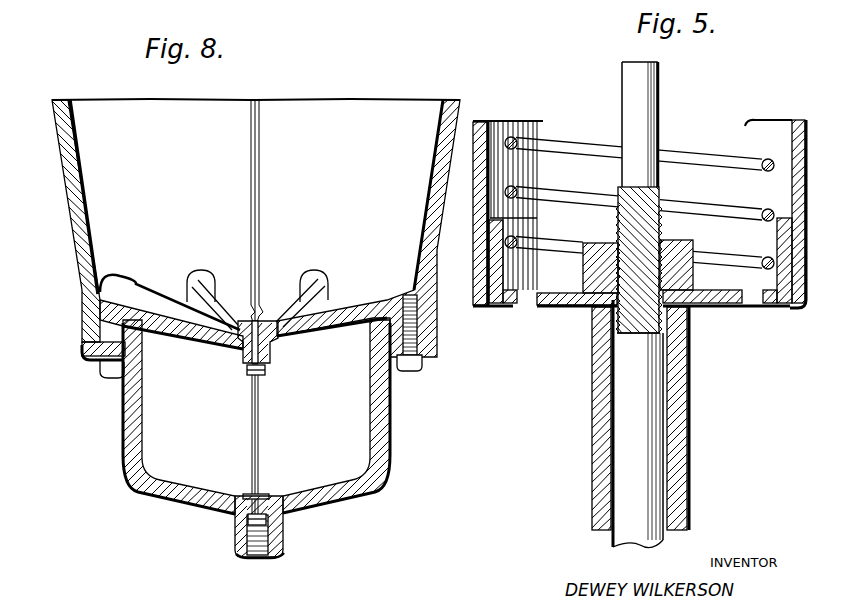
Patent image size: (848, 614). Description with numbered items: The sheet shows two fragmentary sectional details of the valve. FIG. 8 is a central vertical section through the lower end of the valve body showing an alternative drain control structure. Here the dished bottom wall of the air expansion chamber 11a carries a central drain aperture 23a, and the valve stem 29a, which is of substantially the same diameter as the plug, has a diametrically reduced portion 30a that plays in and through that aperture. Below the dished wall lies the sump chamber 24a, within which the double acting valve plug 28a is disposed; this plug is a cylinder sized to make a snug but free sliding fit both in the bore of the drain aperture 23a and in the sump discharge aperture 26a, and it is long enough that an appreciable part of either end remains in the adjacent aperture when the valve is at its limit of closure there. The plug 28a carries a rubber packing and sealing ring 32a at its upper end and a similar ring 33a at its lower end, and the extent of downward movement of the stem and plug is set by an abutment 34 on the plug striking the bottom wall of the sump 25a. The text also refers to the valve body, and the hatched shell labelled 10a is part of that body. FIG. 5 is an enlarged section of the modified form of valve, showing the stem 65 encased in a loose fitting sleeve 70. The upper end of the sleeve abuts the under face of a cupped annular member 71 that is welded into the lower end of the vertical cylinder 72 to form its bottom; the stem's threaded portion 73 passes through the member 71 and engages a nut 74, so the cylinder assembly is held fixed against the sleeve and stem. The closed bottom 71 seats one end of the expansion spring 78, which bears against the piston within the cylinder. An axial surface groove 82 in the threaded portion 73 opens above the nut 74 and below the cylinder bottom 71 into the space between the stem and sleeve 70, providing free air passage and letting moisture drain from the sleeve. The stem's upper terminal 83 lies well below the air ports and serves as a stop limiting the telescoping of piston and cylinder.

In FIG. 8, the lining of upper cup 10a is at (82, 168).
In FIG. 8, the air expansion chamber 11a is at (118, 192).
In FIG. 8, the stem 29a is at (262, 186).
In FIG. 8, the diametrically reduced portion of the stem 30a is at (268, 305).
In FIG. 8, the central drain aperture 23a is at (247, 343).
In FIG. 8, the rubber packing and sealing ring 32a is at (266, 371).
In FIG. 8, the valve plug 28a is at (266, 438).
In FIG. 8, the sump chamber 24a is at (353, 425).
In FIG. 8, the abutment 34 is at (250, 495).
In FIG. 8, the bottom wall of the sump 25a is at (137, 480).
In FIG. 8, the rubber packing and sealing ring 33a is at (268, 522).
In FIG. 8, the sump discharge aperture 26a is at (255, 555).
In FIG. 5, the terminal of the stem 83 is at (630, 62).
In FIG. 5, the vertical cylinder 72 is at (478, 123).
In FIG. 5, the expansion spring 78 is at (720, 157).
In FIG. 5, the threaded portion 73 is at (670, 230).
In FIG. 5, the nut 74 is at (697, 247).
In FIG. 5, the cupped member 71 is at (733, 305).
In FIG. 5, the axial surface groove 82 is at (620, 310).
In FIG. 5, the stem 65 is at (627, 387).
In FIG. 5, the sleeve 70 is at (592, 455).